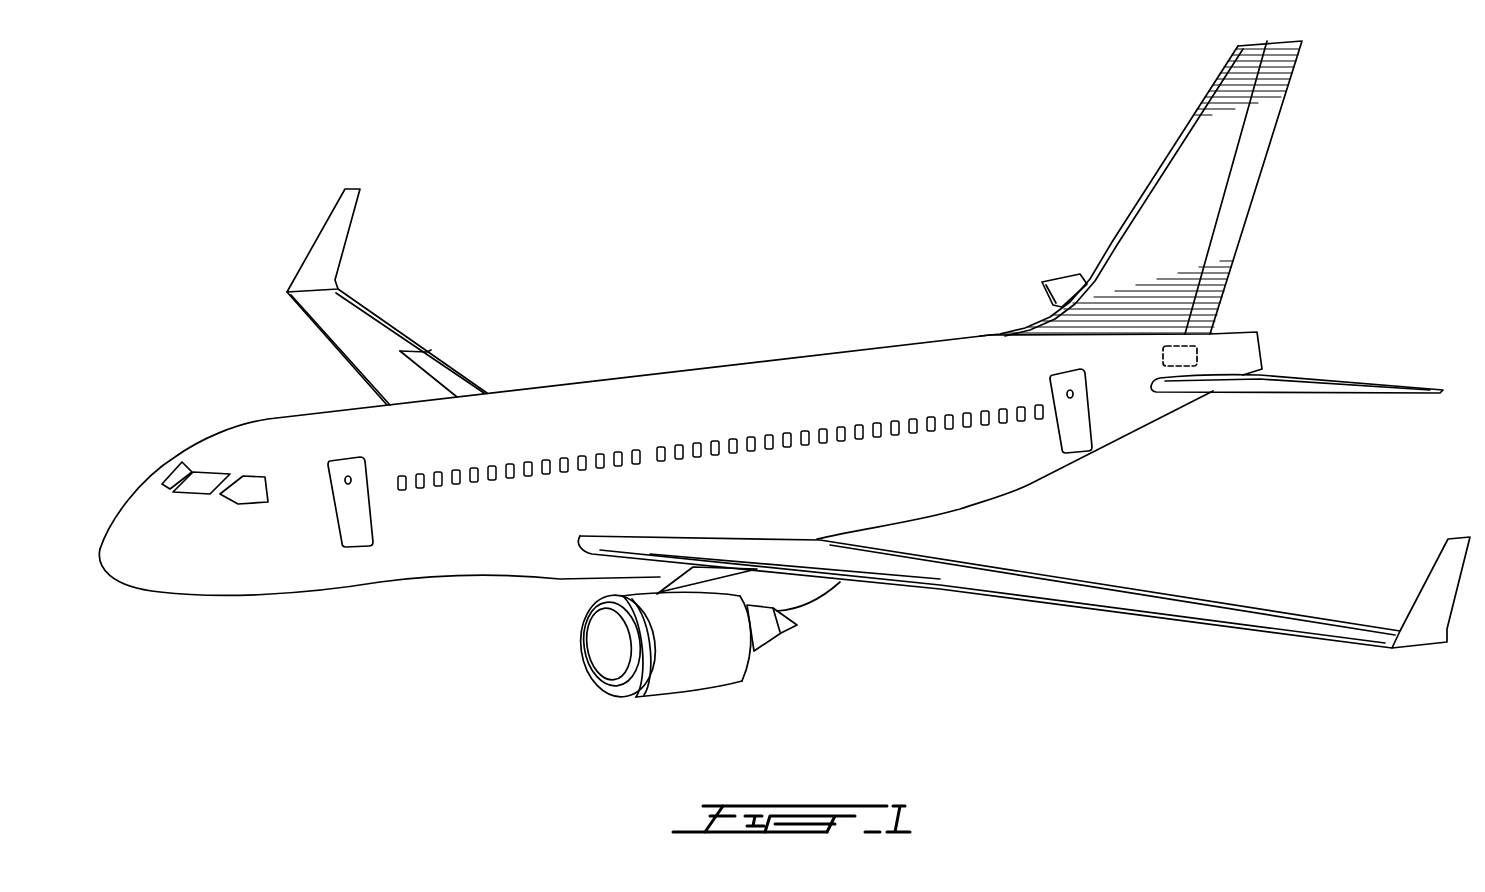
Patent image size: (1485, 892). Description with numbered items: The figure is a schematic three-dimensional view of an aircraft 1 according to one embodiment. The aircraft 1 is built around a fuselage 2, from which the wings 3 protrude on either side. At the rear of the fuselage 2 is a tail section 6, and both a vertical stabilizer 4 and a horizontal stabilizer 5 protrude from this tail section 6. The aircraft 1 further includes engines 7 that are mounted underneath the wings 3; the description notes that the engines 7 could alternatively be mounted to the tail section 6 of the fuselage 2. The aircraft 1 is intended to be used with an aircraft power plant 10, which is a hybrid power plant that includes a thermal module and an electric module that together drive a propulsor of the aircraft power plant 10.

The aircraft 1 is at (653, 285).
The fuselage 2 is at (425, 550).
The wings 3 is at (368, 343).
The vertical stabilizer 4 is at (1180, 183).
The horizontal stabilizer 5 is at (1060, 290).
The tail section 6 is at (990, 312).
The engines 7 is at (735, 663).
The aircraft power plant 10 is at (1197, 357).